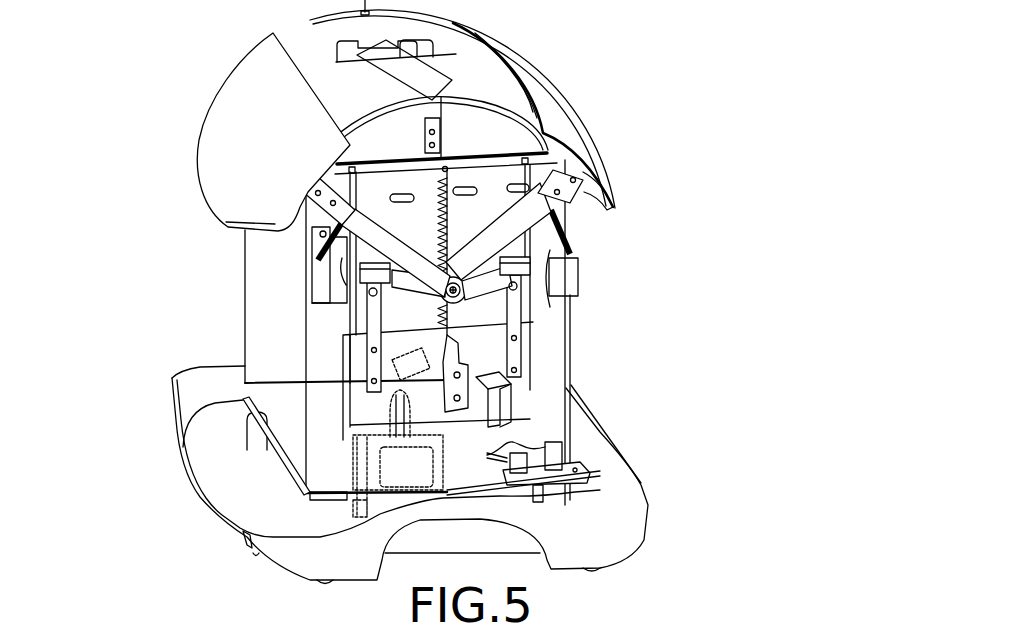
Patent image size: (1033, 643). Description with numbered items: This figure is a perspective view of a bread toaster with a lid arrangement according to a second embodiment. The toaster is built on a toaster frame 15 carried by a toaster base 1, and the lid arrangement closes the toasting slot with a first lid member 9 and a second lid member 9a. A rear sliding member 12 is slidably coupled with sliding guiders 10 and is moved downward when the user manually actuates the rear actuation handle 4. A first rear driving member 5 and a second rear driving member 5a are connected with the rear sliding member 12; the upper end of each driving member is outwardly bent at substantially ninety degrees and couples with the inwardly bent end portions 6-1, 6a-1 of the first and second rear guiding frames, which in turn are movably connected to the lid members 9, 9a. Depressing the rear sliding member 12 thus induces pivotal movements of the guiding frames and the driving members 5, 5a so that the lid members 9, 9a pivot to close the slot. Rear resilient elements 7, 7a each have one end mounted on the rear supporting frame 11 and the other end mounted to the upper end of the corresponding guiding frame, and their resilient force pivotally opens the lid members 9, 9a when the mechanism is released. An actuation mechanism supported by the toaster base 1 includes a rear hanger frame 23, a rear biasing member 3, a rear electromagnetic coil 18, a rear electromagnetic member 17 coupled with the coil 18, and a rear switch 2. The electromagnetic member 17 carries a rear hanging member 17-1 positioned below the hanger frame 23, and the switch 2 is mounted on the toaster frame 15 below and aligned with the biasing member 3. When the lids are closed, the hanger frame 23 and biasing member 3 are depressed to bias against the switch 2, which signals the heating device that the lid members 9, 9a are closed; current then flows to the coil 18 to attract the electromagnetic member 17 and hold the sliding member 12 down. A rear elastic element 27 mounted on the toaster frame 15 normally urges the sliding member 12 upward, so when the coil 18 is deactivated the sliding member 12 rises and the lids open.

The toaster base 1 is at (630, 475).
The rear switch 2 is at (533, 442).
The rear biasing member 3 is at (503, 405).
The rear actuation handle 4 is at (462, 353).
The first rear driving member 5 is at (377, 326).
The second rear driving member 5a is at (517, 315).
The inwardly bent end portion of first rear guiding frame 6-1 is at (368, 267).
The inwardly bent end portion of second rear guiding frame 6a-1 is at (550, 258).
The rear resilient element 7 is at (330, 233).
The rear resilient element 7a is at (563, 228).
The first lid member 9 is at (255, 117).
The second lid member 9a is at (555, 118).
The sliding guider 10 is at (353, 190).
The rear supporting frame 11 is at (337, 292).
The rear sliding member 12 is at (360, 372).
The toaster frame 15 is at (290, 407).
The rear electromagnetic member 17 is at (410, 451).
The rear hanging member 17-1 is at (362, 427).
The rear electromagnetic coil 18 is at (350, 468).
The rear hanger frame 23 is at (245, 383).
The rear elastic element 27 is at (447, 227).